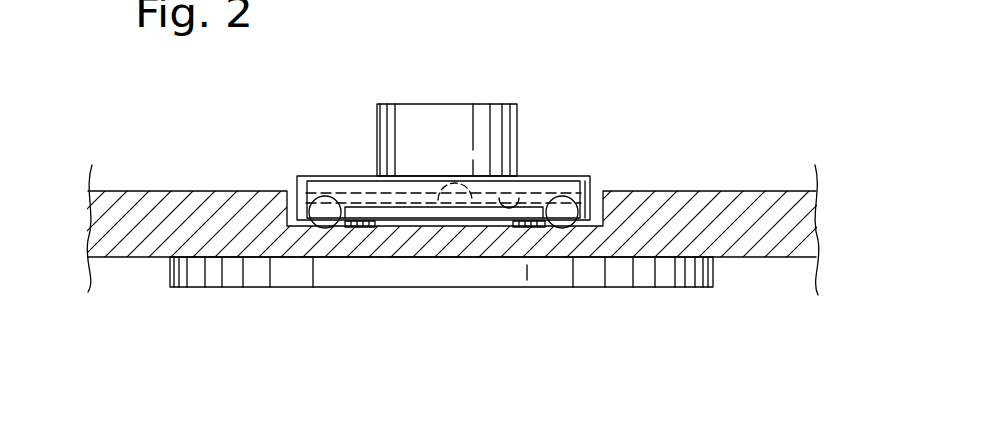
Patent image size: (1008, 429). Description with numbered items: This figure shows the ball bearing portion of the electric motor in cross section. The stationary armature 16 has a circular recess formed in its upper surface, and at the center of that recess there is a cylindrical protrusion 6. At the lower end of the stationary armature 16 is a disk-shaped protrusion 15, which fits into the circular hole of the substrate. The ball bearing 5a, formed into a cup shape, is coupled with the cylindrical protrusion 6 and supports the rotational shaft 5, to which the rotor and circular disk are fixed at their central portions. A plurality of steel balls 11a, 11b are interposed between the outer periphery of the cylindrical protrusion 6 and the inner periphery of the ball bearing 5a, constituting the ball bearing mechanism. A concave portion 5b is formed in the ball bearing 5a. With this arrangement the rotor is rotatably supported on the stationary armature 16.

The rotational shaft 5 is at (458, 106).
The ball bearing 5a is at (513, 208).
The concave portion 5b is at (520, 200).
The cylindrical protrusion 6 is at (468, 192).
The steel ball 11a is at (320, 228).
The steel ball 11b is at (570, 229).
The disk-shaped protrusion 15 is at (427, 275).
The stationary armature 16 is at (633, 230).